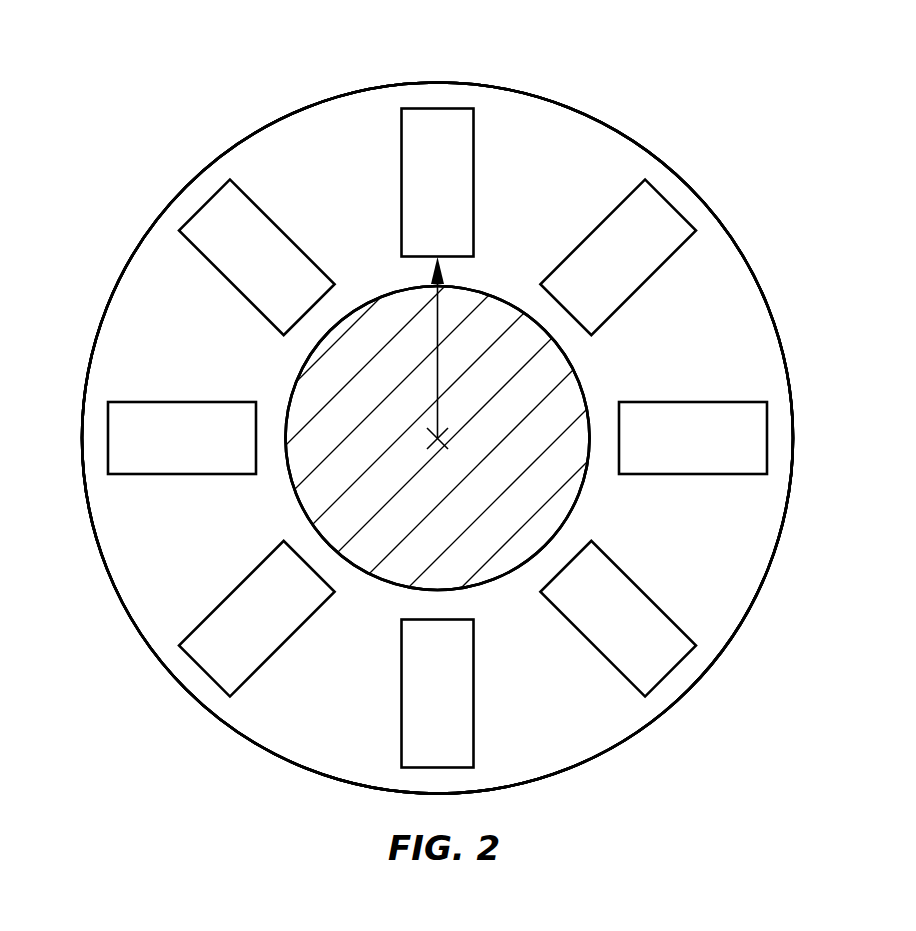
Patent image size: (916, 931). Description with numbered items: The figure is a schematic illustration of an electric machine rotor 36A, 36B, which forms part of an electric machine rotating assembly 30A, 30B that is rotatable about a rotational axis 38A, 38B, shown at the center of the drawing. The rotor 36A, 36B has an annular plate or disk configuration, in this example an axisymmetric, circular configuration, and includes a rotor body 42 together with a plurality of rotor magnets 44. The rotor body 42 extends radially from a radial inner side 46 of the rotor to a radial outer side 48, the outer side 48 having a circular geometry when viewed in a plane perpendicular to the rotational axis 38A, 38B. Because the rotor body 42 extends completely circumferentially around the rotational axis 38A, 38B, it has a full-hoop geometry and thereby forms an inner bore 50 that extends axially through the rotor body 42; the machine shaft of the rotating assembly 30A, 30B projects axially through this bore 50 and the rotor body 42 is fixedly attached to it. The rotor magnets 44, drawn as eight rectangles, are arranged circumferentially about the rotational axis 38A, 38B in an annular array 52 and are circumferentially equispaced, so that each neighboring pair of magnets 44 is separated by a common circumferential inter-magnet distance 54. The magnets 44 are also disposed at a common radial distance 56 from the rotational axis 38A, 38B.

The electric machine rotating assembly 30A is at (498, 423).
The electric machine rotating assembly 30B is at (787, 133).
The electric machine rotor 36A is at (437, 424).
The electric machine rotor 36B is at (645, 138).
The rotational axis 38A is at (419, 485).
The rotational axis 38B is at (437, 438).
The rotor body 42 is at (740, 563).
The rotor magnets 44 is at (437, 438).
The radial inner side 46 is at (356, 300).
The radial outer side 48 is at (325, 100).
The inner bore 50 is at (578, 502).
The rotor magnet array 52 is at (517, 117).
The circumferential inter-magnet distance 54 is at (595, 227).
The radial distance 56 is at (438, 350).